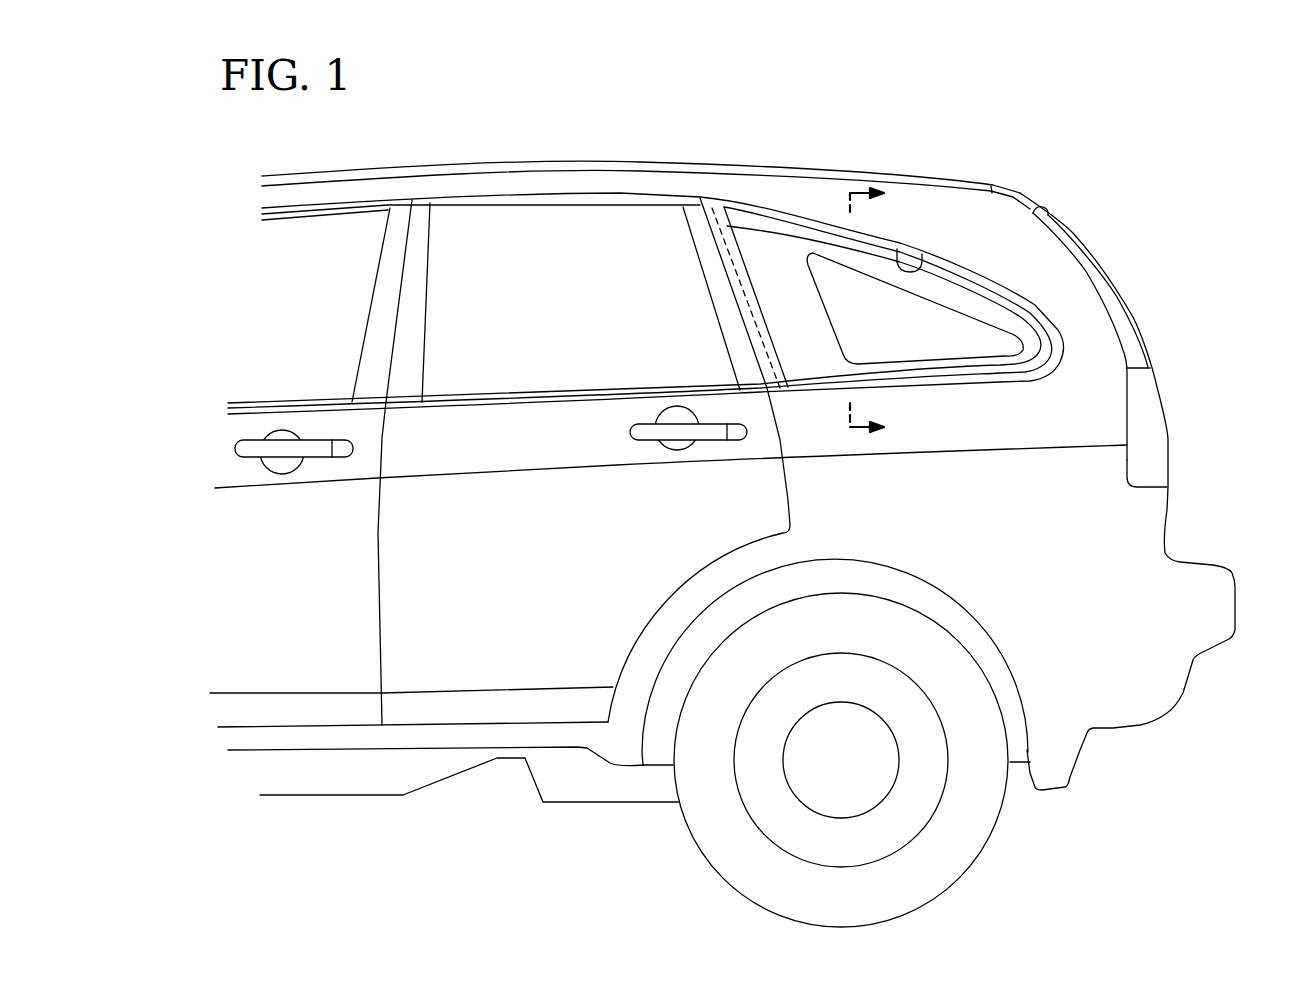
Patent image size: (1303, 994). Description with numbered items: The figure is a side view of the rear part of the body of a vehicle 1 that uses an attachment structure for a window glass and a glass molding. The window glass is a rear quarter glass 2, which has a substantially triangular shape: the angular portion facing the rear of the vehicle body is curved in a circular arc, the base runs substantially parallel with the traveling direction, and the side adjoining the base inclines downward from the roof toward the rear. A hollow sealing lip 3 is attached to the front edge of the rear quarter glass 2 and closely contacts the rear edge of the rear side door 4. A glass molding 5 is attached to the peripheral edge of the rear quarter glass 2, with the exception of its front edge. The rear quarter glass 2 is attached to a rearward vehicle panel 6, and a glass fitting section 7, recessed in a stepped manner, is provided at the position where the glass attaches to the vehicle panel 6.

The vehicle 1 is at (940, 163).
The rear quarter glass 2 is at (932, 320).
The hollow sealing lip 3 is at (750, 293).
The rear side door 4 is at (690, 520).
The glass molding 5 is at (1032, 318).
The vehicle panel 6 is at (980, 235).
The glass fitting section 7 is at (903, 248).